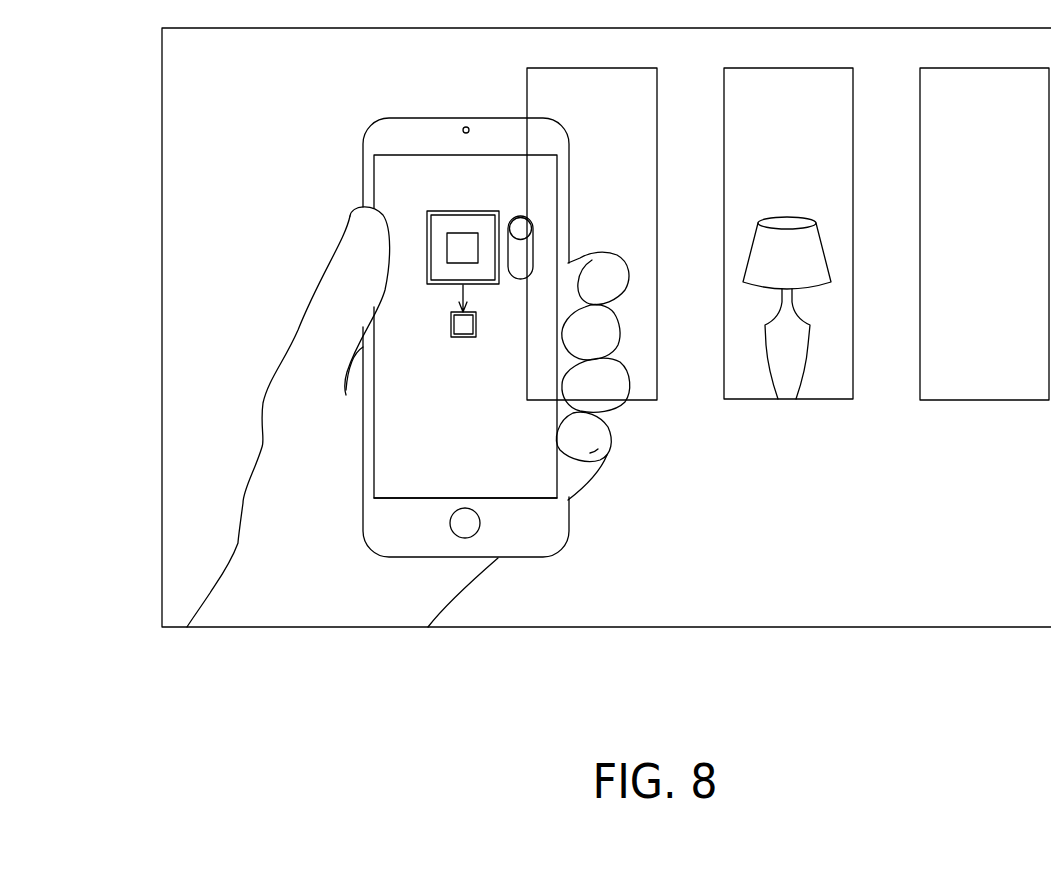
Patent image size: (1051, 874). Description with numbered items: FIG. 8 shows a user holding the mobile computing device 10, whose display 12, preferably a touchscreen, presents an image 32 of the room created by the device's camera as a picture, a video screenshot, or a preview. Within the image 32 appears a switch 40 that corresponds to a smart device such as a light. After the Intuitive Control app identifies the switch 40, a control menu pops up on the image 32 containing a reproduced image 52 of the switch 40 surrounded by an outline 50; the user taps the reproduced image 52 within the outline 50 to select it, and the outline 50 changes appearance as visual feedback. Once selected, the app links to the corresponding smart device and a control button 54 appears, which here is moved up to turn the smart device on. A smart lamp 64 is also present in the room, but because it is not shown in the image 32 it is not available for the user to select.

The mobile computing device 10 is at (404, 138).
The display 12 is at (524, 503).
The image 32 is at (408, 173).
The switch 40 is at (463, 338).
The outline 50 is at (427, 262).
The reproduced image 52 is at (456, 264).
The control button 54 is at (519, 227).
The smart lamp 64 is at (788, 250).